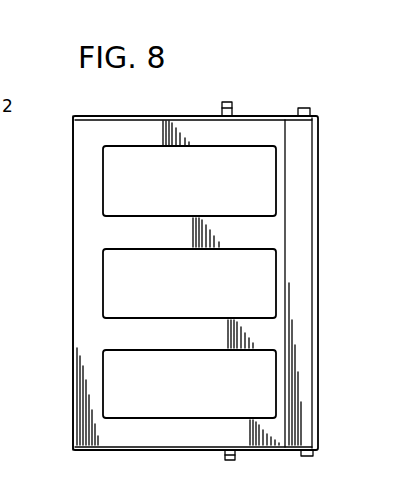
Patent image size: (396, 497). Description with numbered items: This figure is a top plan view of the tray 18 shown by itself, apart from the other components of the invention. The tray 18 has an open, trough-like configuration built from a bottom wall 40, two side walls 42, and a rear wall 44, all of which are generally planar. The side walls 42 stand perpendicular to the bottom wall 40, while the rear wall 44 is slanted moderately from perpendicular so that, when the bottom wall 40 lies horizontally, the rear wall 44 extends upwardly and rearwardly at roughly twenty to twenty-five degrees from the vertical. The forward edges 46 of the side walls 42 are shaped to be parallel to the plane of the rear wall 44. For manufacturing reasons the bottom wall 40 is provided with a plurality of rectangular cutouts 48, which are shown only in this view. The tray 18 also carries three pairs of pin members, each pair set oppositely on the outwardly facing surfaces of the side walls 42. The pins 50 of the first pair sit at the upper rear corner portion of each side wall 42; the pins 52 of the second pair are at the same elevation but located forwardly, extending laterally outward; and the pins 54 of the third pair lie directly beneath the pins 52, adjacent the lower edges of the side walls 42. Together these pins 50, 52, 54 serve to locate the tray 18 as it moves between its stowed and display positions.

The tray 18 is at (70, 290).
The bottom wall 40 is at (165, 243).
The side walls 42 is at (160, 118).
The rear wall 44 is at (320, 405).
The forward edges 46 is at (122, 118).
The rectangular cutouts 48 is at (207, 215).
The pins of the first pair 50 is at (310, 110).
The pins of the second pair 52 is at (233, 110).
The pins of the third pair 54 is at (227, 103).